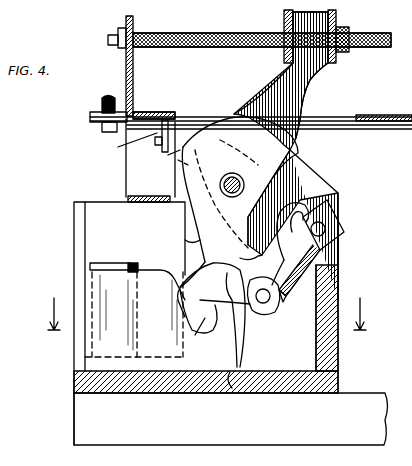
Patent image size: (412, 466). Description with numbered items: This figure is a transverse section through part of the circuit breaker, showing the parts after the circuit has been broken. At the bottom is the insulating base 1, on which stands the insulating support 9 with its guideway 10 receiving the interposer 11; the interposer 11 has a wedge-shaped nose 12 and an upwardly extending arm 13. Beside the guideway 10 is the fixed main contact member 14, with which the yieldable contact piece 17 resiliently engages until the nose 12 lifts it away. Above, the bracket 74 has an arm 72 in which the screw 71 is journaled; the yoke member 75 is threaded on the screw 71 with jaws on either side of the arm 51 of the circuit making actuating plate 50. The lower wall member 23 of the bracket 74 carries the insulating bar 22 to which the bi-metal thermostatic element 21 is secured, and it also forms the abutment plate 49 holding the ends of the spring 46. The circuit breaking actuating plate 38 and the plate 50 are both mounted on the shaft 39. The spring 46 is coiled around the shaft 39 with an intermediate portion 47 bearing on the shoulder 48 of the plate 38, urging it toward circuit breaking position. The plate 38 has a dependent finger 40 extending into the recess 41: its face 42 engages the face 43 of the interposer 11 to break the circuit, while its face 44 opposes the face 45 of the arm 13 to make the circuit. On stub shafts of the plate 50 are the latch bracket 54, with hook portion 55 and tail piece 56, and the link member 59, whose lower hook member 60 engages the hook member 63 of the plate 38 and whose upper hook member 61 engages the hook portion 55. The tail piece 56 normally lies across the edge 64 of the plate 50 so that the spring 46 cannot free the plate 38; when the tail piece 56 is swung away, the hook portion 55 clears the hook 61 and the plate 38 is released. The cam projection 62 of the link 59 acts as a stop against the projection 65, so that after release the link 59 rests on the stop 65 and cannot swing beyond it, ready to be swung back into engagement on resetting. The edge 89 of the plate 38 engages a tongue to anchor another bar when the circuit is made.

The base 1 is at (337, 427).
The support 9 is at (340, 359).
The guideway 10 is at (80, 362).
The interposer 11 is at (160, 362).
The nose 12 is at (206, 314).
The arm 13 is at (240, 378).
The main contact member 14 is at (405, 210).
The yieldable contact piece 17 is at (125, 264).
The thermostatic element 21 is at (393, 130).
The insulating bar 22 is at (90, 127).
The lower wall member 23 is at (90, 113).
The circuit breaking actuating plate 38 is at (240, 189).
The shaft 39 is at (237, 172).
The finger 40 is at (212, 315).
The recess 41 is at (198, 322).
The face 42 is at (185, 240).
The face 43 is at (180, 272).
The face 44 is at (197, 284).
The face 45 is at (263, 306).
The spring 46 is at (186, 180).
The intermediate portion 47 is at (160, 165).
The shoulder 48 is at (150, 143).
The abutment plate 49 is at (127, 146).
The circuit making actuating plate 50 is at (303, 101).
The arm 51 is at (326, 24).
The latch bracket 54 is at (344, 230).
The hook portion 55 is at (330, 243).
The tail piece 56 is at (305, 283).
The link member 59 is at (278, 307).
The lower hook member 60 is at (221, 305).
The upper hook member 61 is at (303, 210).
The cam projection 62 is at (320, 262).
The hook member 63 is at (224, 235).
The edge 64 is at (295, 298).
The projection 65 is at (245, 259).
The screw 71 is at (210, 44).
The arm 72 is at (133, 22).
The bracket 74 is at (126, 82).
The yoke member 75 is at (284, 19).
The edge 89 is at (297, 148).